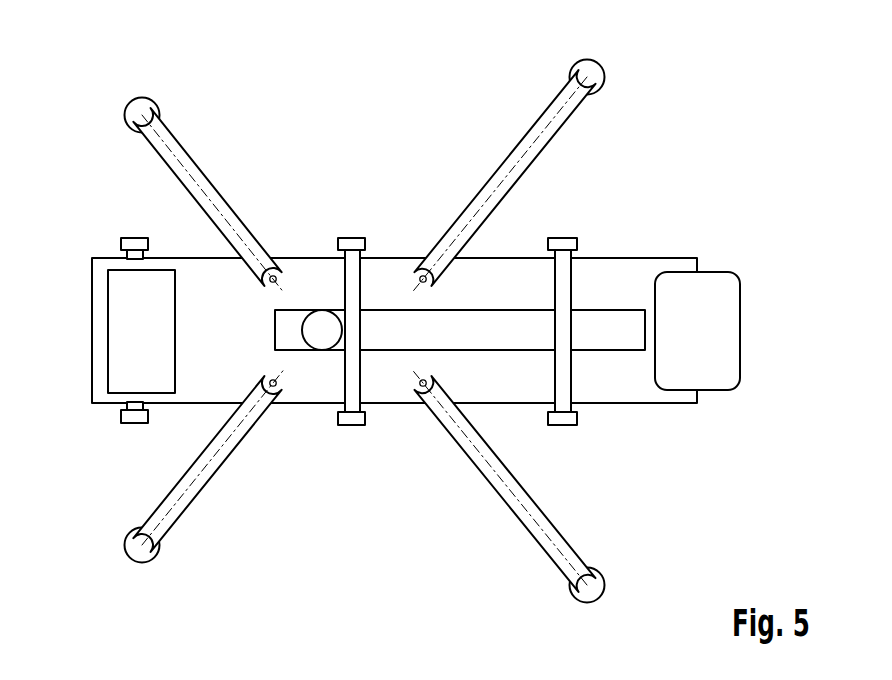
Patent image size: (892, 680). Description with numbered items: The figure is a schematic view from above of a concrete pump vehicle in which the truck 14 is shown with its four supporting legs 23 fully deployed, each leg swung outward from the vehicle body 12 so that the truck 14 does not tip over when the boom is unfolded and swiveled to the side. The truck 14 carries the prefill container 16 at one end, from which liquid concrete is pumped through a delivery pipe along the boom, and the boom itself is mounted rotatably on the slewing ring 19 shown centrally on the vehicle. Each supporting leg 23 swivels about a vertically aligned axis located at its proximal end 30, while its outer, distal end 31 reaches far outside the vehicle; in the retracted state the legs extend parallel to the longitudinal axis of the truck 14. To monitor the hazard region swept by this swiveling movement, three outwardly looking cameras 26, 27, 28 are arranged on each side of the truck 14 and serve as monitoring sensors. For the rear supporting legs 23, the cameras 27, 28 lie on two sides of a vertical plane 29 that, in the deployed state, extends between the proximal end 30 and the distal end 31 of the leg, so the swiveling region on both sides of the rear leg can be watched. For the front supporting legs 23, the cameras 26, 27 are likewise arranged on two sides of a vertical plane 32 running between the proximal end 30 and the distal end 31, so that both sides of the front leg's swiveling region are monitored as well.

The chassis body 12 is at (623, 287).
The truck 14 is at (120, 325).
The prefill container 16 is at (725, 330).
The slewing ring 19 is at (303, 326).
The supporting leg 23 is at (364, 331).
The camera 26 is at (135, 236).
The camera 27 is at (351, 236).
The camera 28 is at (564, 236).
The vertical plane 29 is at (499, 168).
The proximal end 30 is at (262, 283).
The distal end 31 is at (136, 99).
The vertical plane 32 is at (193, 148).